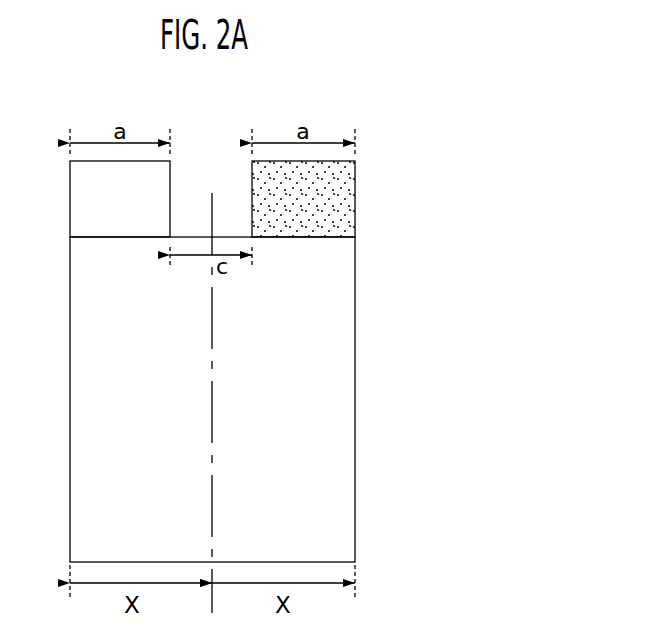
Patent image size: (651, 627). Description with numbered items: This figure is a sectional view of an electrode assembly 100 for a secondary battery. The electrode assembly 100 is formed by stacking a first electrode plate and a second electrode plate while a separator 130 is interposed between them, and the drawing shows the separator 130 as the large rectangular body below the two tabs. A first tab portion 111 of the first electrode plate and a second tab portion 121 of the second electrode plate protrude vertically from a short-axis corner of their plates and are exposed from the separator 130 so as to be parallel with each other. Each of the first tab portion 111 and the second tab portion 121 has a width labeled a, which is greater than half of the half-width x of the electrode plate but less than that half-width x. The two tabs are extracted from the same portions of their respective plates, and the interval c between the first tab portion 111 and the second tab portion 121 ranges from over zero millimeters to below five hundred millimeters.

The electrode assembly 100 is at (408, 138).
The first tab portion 111 is at (83, 199).
The second tab portion 121 is at (343, 199).
The separator 130 is at (343, 412).